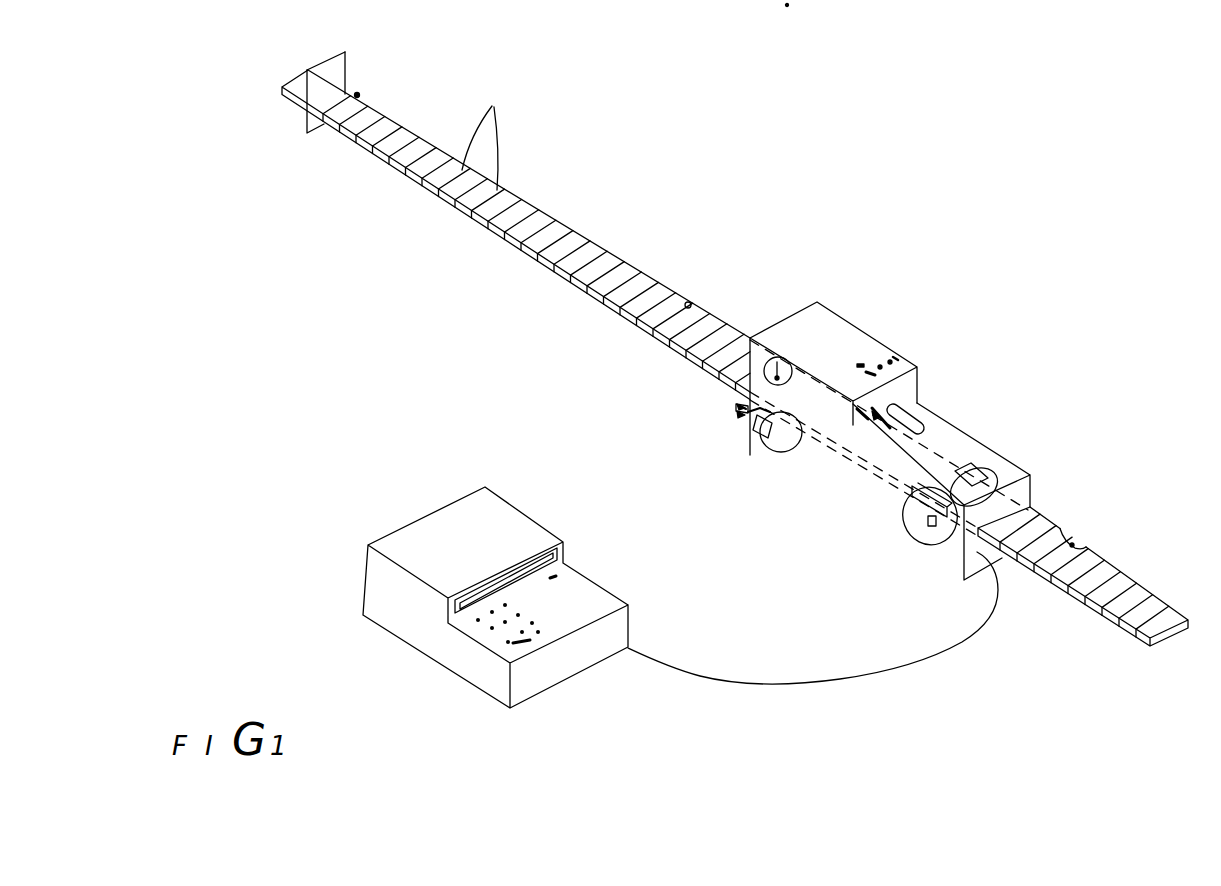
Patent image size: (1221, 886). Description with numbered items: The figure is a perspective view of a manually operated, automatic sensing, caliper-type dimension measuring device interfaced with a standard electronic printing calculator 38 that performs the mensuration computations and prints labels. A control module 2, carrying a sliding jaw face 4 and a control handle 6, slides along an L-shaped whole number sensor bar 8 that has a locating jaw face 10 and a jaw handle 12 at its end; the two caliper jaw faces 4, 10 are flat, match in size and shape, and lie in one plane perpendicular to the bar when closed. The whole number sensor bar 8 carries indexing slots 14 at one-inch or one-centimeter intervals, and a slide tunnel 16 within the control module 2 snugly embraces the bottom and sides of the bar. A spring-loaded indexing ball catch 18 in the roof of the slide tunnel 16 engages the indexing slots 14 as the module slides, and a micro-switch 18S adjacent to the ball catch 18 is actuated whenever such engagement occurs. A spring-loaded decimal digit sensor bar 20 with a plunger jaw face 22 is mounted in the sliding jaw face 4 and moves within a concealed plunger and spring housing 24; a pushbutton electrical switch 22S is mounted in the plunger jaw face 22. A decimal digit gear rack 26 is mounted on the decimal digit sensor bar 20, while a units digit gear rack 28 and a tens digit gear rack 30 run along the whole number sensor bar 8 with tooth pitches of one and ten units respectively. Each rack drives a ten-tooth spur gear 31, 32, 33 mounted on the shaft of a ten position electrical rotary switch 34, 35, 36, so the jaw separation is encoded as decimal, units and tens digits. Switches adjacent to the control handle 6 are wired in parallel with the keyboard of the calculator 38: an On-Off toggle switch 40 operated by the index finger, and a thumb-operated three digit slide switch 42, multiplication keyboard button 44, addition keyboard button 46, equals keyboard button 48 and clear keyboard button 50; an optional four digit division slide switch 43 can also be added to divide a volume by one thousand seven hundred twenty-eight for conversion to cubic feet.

The control module 2 is at (934, 416).
The sliding jaw face 4 is at (747, 396).
The control handle 6 is at (912, 425).
The whole number sensor bar 8 is at (398, 112).
The locating jaw face 10 is at (340, 63).
The jaw handle 12 is at (291, 85).
The indexing slots 14 is at (500, 136).
The slide tunnel 16 is at (1010, 508).
The indexing ball catch 18 is at (774, 262).
The micro-switch 18S is at (777, 362).
The decimal digit sensor bar 20 is at (745, 415).
The plunger jaw face 22 is at (745, 408).
The pushbutton electrical switch 22S is at (563, 368).
The plunger and spring housing 24 is at (746, 420).
The decimal digit gear rack 26 is at (748, 416).
The units digit gear rack 28 is at (456, 199).
The tens digit gear rack 30 is at (518, 198).
The ten-tooth spur gear 31 is at (758, 424).
The ten-tooth spur gear 32 is at (940, 530).
The ten-tooth spur gear 33 is at (976, 486).
The ten position electrical rotary switch 34 is at (772, 440).
The ten position electrical rotary switch 35 is at (930, 522).
The ten position electrical rotary switch 36 is at (980, 492).
The electronic printing calculator 38 is at (366, 560).
The On-Off toggle switch 40 is at (878, 420).
The 3 digit slide switch 42 is at (870, 372).
The four digit division slide switch 43 is at (860, 364).
The multiplication keyboard button 44 is at (882, 358).
The addition keyboard button 46 is at (895, 360).
The equals keyboard button 48 is at (878, 417).
The clear keyboard button 50 is at (860, 415).